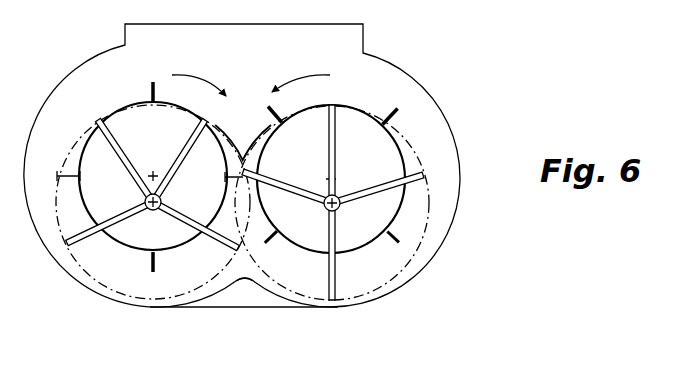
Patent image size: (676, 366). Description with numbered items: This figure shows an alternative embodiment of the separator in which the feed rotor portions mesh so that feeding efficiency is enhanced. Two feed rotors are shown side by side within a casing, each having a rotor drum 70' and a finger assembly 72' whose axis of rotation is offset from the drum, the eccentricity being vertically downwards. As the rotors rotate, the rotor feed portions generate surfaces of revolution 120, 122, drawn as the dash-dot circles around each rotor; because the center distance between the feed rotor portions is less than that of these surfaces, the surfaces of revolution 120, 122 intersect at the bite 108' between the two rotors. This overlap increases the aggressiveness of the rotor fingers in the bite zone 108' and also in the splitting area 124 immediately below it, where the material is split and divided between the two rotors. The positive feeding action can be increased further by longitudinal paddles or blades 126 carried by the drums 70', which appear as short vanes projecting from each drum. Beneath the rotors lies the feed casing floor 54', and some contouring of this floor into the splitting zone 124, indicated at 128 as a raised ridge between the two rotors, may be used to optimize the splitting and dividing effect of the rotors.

The feed casing floor 54' is at (242, 186).
The rotor drum 70' is at (242, 198).
The finger assembly 72' is at (245, 202).
The bite 108' is at (243, 131).
The surface of revolution 120 is at (425, 263).
The surface of revolution 122 is at (85, 284).
The splitting area 124 is at (184, 307).
The longitudinal paddles or blades 126 is at (152, 88).
The contouring of the feed casing floor 128 is at (231, 296).